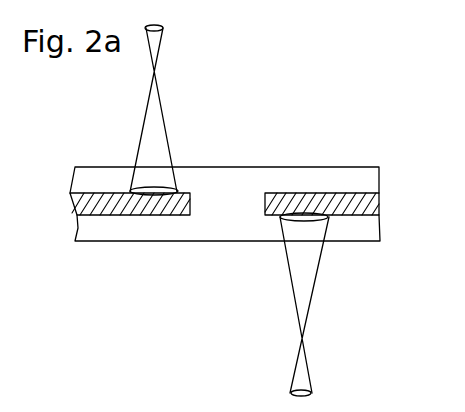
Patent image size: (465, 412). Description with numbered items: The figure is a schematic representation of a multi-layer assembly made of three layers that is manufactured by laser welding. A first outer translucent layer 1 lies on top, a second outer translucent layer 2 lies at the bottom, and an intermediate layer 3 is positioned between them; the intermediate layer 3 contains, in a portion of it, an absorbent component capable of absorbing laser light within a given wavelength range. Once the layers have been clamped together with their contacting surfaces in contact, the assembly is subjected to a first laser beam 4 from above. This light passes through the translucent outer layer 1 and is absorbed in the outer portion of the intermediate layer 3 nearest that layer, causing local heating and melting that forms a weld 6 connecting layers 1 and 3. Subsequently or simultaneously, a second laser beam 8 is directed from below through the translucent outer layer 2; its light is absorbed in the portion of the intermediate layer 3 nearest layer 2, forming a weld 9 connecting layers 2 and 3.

The first outer translucent layer 1 is at (300, 180).
The second outer translucent layer 2 is at (218, 227).
The intermediate layer 3 is at (379, 208).
The first laser beam 4 is at (158, 30).
The weld 6 is at (157, 190).
The second laser beam 8 is at (304, 377).
The weld 9 is at (312, 220).